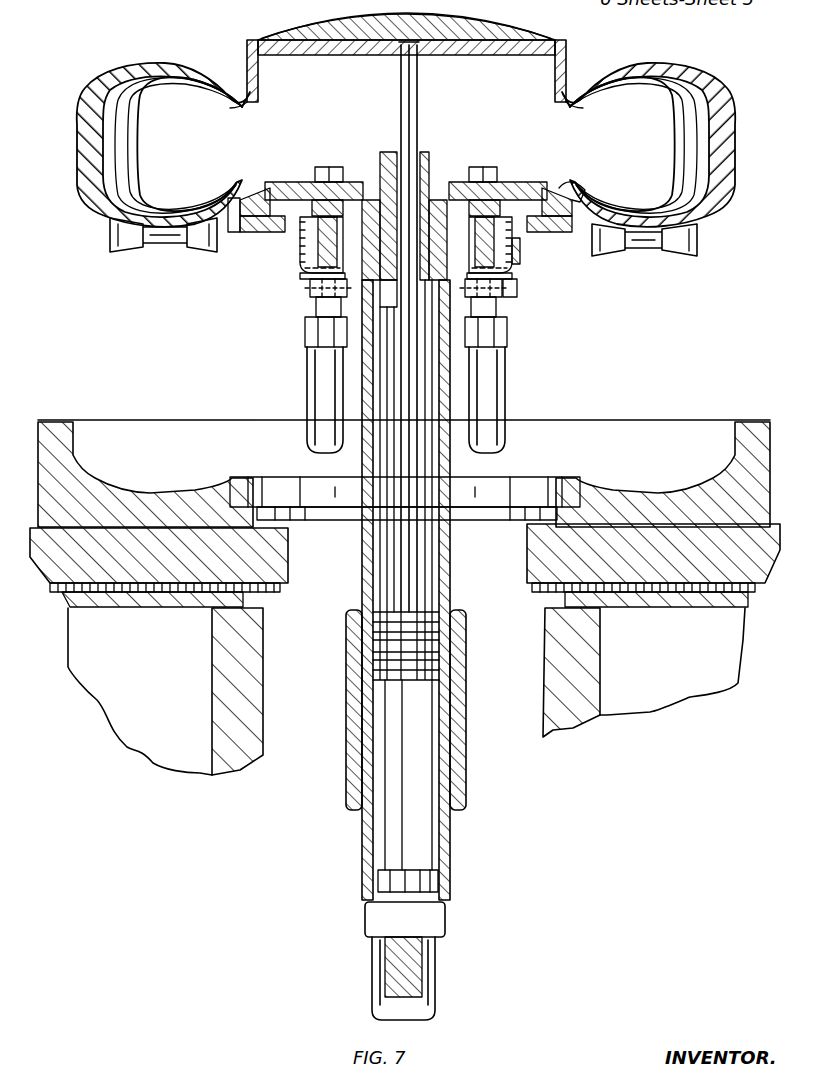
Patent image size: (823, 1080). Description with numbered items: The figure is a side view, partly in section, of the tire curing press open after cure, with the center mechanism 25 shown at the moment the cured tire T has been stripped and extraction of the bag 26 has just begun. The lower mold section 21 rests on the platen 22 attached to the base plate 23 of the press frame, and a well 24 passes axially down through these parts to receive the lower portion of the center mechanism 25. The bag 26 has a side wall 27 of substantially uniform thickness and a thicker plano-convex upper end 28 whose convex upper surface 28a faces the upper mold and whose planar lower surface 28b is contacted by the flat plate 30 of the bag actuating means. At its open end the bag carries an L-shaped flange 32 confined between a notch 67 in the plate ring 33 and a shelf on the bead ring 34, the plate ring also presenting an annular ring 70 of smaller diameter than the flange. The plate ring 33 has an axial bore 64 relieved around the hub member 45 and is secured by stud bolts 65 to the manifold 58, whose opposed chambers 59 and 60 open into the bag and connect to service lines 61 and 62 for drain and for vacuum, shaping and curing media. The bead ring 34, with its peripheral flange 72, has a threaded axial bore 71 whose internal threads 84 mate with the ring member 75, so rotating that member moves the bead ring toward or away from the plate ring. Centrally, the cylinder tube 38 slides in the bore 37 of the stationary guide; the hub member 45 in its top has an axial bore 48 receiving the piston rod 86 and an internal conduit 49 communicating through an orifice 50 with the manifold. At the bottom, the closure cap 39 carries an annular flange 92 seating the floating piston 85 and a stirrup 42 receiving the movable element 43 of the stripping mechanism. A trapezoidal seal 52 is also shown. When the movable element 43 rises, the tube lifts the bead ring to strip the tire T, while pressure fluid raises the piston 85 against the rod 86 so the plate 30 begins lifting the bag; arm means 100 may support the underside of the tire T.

The lower mold section 21 is at (655, 425).
The platen 22 is at (745, 567).
The base plate 23 is at (594, 686).
The well 24 is at (522, 722).
The center mechanism 25 is at (307, 756).
The bag 26 is at (167, 118).
The side wall 27 is at (102, 147).
The upper end 28 is at (300, 38).
The convex upper surface 28a is at (520, 30).
The planar lower surface 28b is at (330, 50).
The flat plate 30 is at (519, 55).
The flange 32 is at (262, 200).
The plate ring 33 is at (287, 185).
The bead ring 34 is at (247, 232).
The bore 37 is at (450, 802).
The cylinder tube 38 is at (448, 550).
The closure cap 39 is at (377, 922).
The stirrup 42 is at (410, 1013).
The movable element 43 is at (410, 983).
The hub member 45 is at (430, 158).
The axial bore 48 is at (398, 160).
The internal conduit 49 is at (438, 215).
The orifice 50 is at (448, 236).
The trapezoidal seal 52 is at (327, 325).
The pressure fluid manifold 58 is at (310, 300).
The pressure fluid chamber 59 is at (305, 250).
The pressure fluid chamber 60 is at (515, 275).
The service line 61 is at (317, 372).
The service line 62 is at (502, 407).
The axial bore 64 is at (485, 170).
The stud bolts 65 is at (333, 200).
The notch 67 is at (233, 230).
The annular ring 70 is at (520, 228).
The axial bore 71 is at (300, 272).
The peripheral flange 72 is at (590, 192).
The ring member 75 is at (515, 255).
The internal threads 84 is at (512, 268).
The floating piston 85 is at (400, 648).
The piston rod 86 is at (399, 88).
The annular flange 92 is at (410, 870).
The arm means 100 is at (108, 238).
The tire T is at (90, 175).